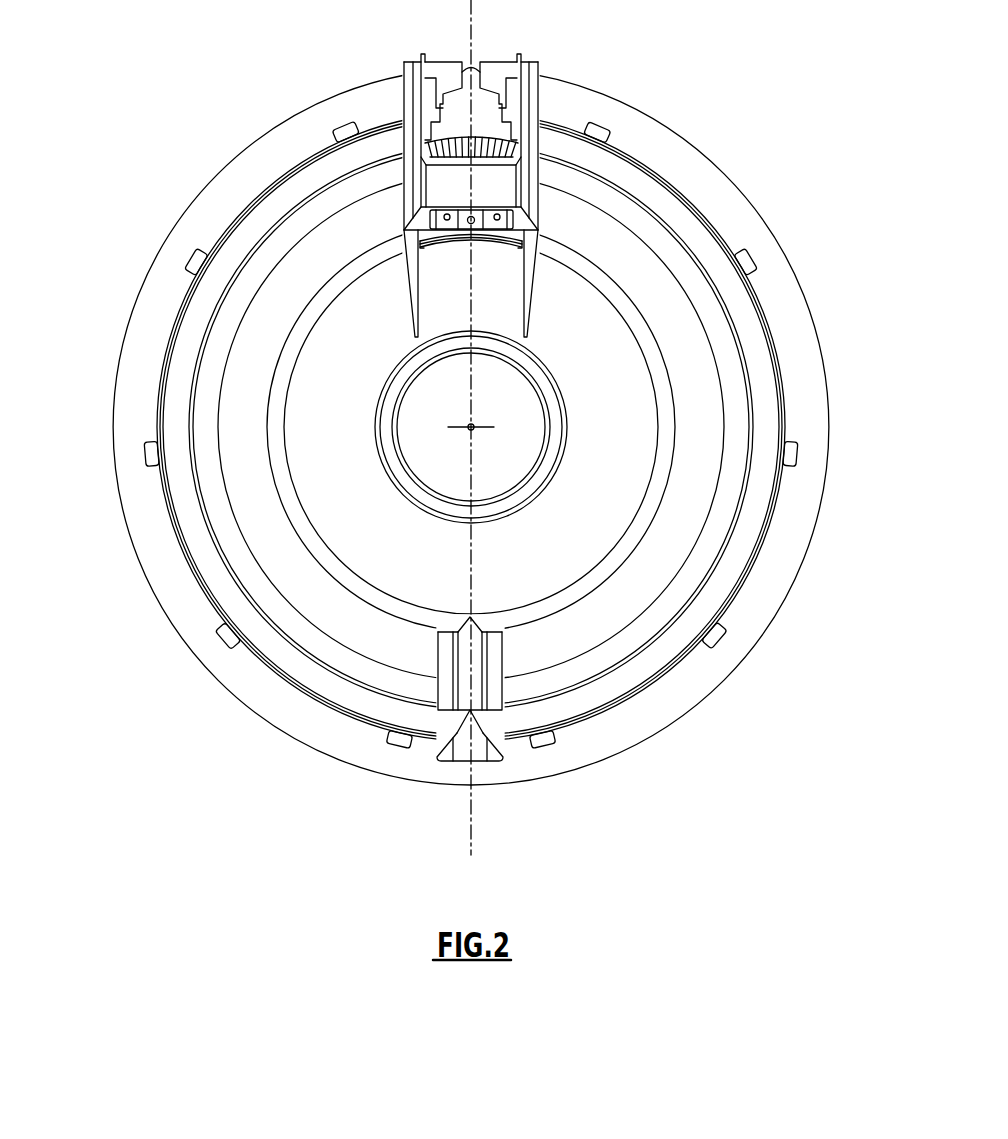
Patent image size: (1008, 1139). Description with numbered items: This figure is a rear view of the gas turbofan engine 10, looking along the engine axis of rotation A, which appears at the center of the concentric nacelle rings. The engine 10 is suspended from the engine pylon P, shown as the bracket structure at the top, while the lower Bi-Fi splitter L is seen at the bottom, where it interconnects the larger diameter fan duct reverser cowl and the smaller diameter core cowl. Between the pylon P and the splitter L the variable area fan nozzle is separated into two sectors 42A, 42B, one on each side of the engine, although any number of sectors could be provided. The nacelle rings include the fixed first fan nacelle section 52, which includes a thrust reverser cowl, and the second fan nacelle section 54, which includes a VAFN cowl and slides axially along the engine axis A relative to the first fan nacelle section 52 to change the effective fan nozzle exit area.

The gas turbofan engine 10 is at (475, 427).
The first VAFN sector 42A is at (121, 308).
The second VAFN sector 42B is at (830, 312).
The first fan nacelle section 52 is at (733, 207).
The second fan nacelle section 54 is at (775, 417).
The engine pylon P is at (532, 88).
The engine axis of rotation A is at (475, 431).
The lower Bi-Fi splitter L is at (487, 693).